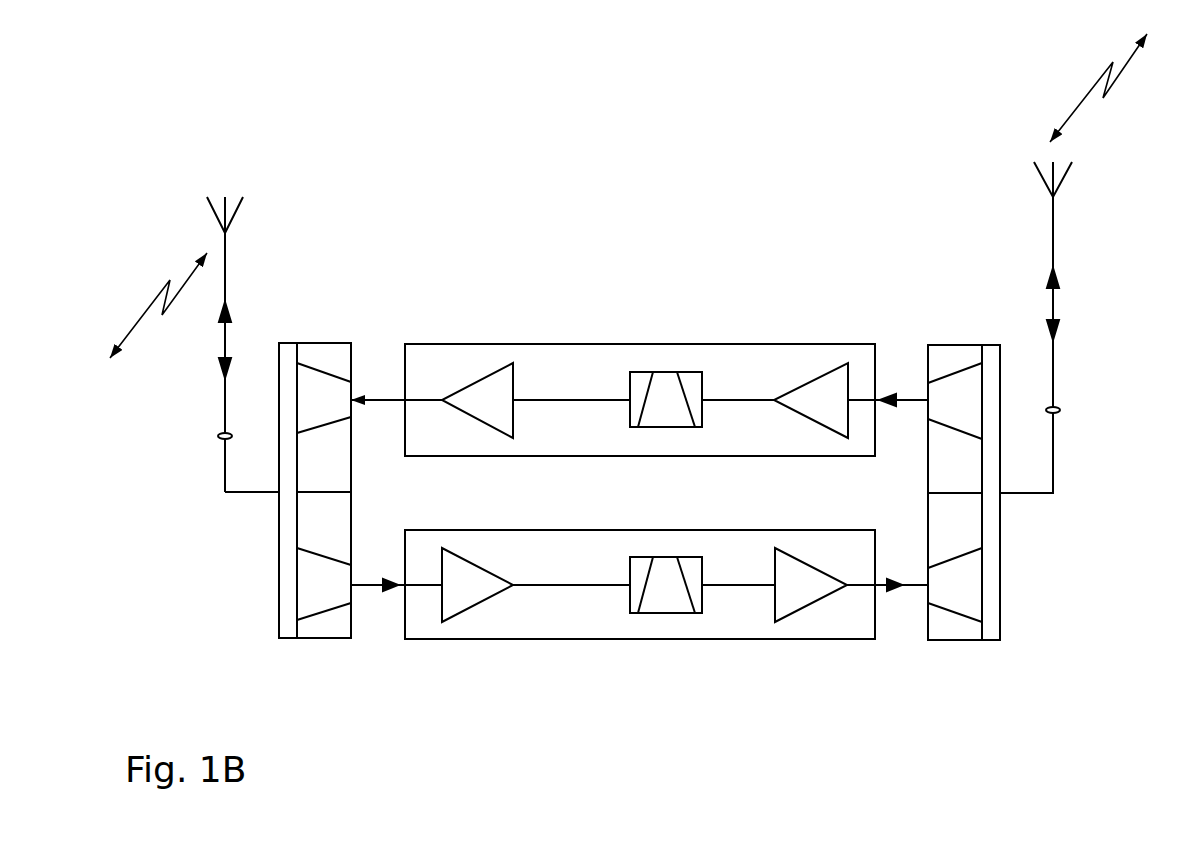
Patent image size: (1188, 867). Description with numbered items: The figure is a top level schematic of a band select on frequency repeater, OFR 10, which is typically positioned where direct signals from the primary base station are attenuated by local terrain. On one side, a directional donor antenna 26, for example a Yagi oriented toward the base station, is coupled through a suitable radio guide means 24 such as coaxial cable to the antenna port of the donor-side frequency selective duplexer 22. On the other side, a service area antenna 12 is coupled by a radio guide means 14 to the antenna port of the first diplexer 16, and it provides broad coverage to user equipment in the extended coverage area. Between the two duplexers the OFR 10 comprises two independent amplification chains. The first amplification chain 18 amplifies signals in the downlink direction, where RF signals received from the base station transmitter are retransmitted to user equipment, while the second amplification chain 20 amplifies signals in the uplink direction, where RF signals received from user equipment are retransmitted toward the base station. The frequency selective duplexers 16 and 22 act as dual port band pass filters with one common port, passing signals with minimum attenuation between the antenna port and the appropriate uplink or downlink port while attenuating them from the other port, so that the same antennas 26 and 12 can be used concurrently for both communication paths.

The on frequency repeater 10 is at (633, 383).
The service area antenna 12 is at (232, 190).
The radio guide means 14 is at (218, 439).
The first diplexer 16 is at (329, 343).
The first amplification chain 18 is at (605, 343).
The second amplification chain 20 is at (610, 640).
The frequency selective duplexer 22 is at (948, 345).
The radio guide means 24 is at (1061, 412).
The donor antenna 26 is at (1032, 155).